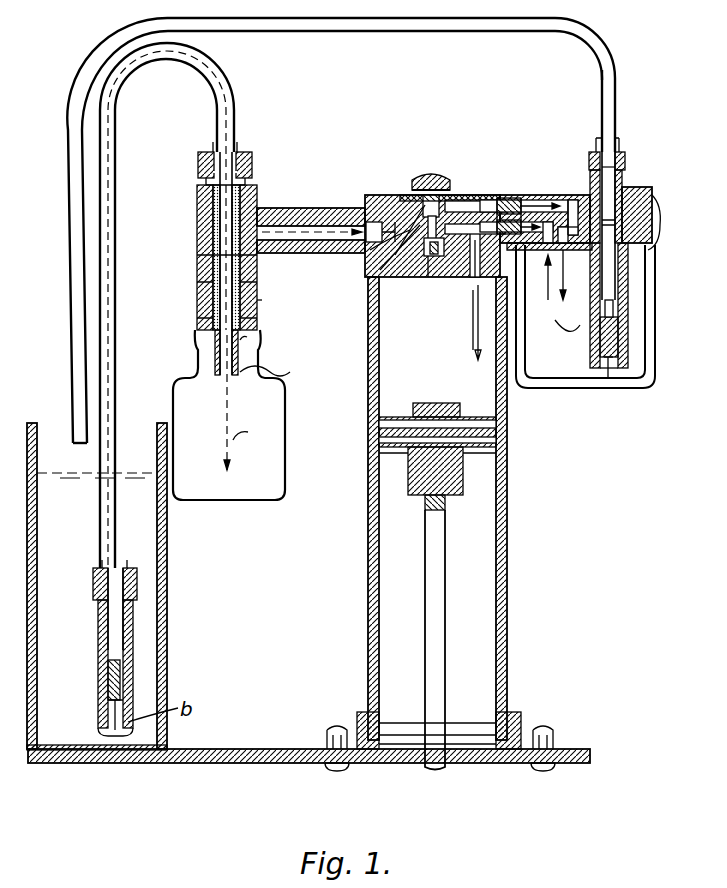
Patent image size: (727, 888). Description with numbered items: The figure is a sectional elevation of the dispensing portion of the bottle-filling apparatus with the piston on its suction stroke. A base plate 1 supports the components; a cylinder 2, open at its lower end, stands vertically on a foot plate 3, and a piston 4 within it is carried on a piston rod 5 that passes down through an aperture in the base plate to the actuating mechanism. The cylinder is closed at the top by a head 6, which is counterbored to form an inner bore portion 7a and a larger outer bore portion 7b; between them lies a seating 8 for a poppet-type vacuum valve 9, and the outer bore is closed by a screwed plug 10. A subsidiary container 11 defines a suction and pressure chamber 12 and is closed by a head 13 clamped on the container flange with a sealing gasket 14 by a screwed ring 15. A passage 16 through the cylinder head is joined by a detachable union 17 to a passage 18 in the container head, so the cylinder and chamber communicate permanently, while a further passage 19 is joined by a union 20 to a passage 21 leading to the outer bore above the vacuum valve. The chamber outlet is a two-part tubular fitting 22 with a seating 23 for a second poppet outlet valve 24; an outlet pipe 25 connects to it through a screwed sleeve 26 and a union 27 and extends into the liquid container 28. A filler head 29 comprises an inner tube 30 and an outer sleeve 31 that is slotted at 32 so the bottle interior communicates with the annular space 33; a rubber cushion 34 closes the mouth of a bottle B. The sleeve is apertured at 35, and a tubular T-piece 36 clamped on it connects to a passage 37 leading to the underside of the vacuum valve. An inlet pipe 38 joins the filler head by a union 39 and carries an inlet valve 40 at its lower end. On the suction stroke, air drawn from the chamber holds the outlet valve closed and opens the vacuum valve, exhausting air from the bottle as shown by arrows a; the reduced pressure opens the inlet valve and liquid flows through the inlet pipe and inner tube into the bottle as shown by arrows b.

The base plate 1 is at (248, 766).
The cylinder 2 is at (510, 530).
The foot plate 3 is at (528, 712).
The piston 4 is at (500, 432).
The piston rod 5 is at (425, 590).
The cylinder head 6 is at (378, 195).
The inner bore portion 7a is at (432, 277).
The outer bore portion 7b is at (428, 178).
The seating 8 is at (400, 277).
The vacuum valve 9 is at (455, 200).
The screwed plug 10 is at (440, 178).
The subsidiary container 11 is at (602, 380).
The suction and pressure chamber 12 is at (556, 372).
The container head 13 is at (540, 195).
The sealing gasket 14 is at (548, 272).
The screwed ring 15 is at (658, 215).
The passage 16 is at (474, 280).
The detachable union 17 is at (473, 318).
The passage 18 is at (563, 275).
The passage 19 is at (570, 198).
The detachable union 20 is at (510, 198).
The passage 21 is at (482, 200).
The tubular fitting 22 is at (628, 372).
The seating 23 is at (598, 340).
The outlet valve 24 is at (609, 380).
The outlet pipe 25 is at (598, 62).
The screwed sleeve 26 is at (622, 185).
The union 27 is at (590, 162).
The container 28 is at (48, 428).
The filler head 29 is at (197, 248).
The inner tube 30 is at (220, 372).
The outer sleeve 31 is at (197, 322).
The slot 32 is at (250, 345).
The annular space 33 is at (197, 290).
The rubber cushion 34 is at (257, 300).
The aperture 35 is at (198, 225).
The tubular T-piece 36 is at (305, 205).
The passage 37 is at (371, 265).
The inlet pipe 38 is at (118, 240).
The union 39 is at (245, 152).
The inlet valve 40 is at (135, 690).
The bottle B is at (252, 508).
The arrows a is at (283, 272).
The arrows b is at (249, 431).